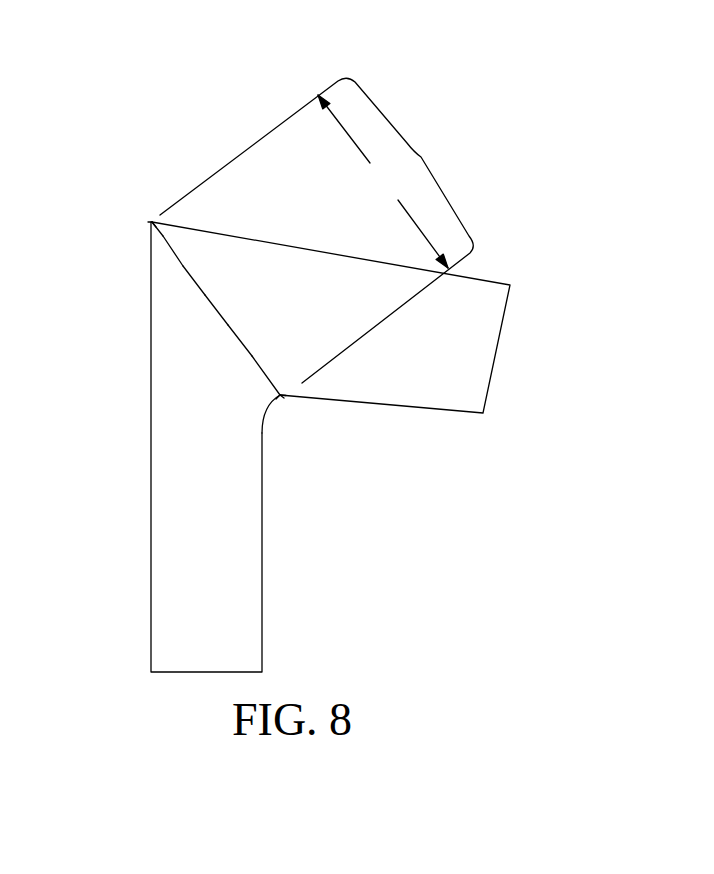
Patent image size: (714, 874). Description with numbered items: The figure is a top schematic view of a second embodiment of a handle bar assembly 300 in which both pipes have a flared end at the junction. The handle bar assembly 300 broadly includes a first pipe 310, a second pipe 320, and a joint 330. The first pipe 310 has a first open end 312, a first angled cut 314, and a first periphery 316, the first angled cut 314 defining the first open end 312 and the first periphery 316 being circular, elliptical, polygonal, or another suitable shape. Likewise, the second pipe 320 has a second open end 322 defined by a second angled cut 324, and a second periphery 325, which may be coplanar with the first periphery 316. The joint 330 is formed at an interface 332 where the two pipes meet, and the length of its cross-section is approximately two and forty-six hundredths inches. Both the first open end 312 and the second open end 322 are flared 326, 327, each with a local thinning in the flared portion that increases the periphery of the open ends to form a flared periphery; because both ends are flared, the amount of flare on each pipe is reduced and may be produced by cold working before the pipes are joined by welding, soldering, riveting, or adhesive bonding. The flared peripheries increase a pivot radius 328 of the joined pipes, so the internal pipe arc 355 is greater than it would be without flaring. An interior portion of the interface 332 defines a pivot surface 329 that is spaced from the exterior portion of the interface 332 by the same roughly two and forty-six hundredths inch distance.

The handle bar assembly 300 is at (248, 70).
The first pipe 310 is at (151, 533).
The first open end 312 is at (163, 236).
The first angled cut 314 is at (183, 266).
The first periphery 316 is at (205, 295).
The second pipe 320 is at (493, 282).
The second open end 322 is at (228, 325).
The second angled cut 324 is at (252, 356).
The second periphery 325 is at (277, 390).
The flare of first open end 326 is at (281, 398).
The flare of second open end 327 is at (282, 395).
The pivot radius 328 is at (278, 400).
The pivot surface 329 is at (283, 397).
The joint 330 is at (152, 222).
The interface 332 is at (152, 222).
The internal pipe arc 355 is at (423, 158).